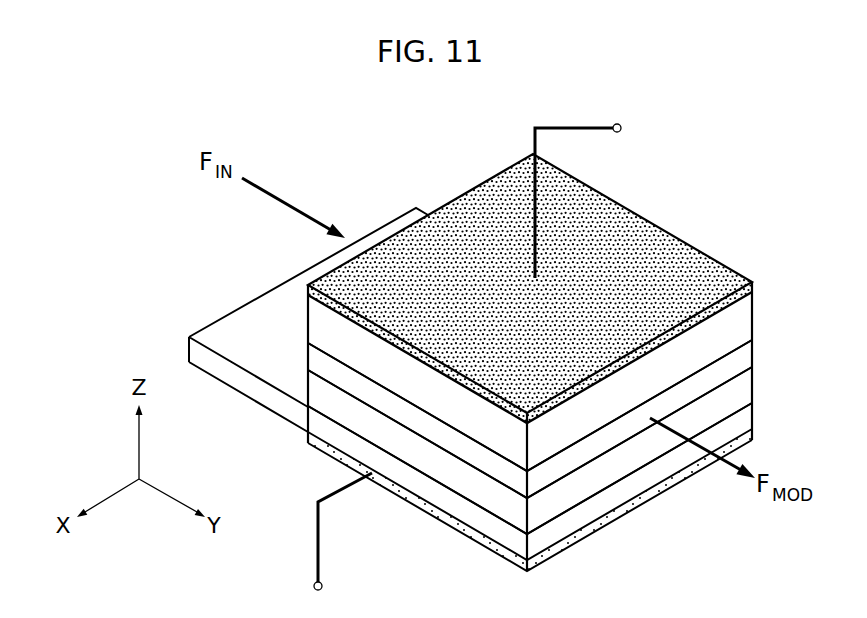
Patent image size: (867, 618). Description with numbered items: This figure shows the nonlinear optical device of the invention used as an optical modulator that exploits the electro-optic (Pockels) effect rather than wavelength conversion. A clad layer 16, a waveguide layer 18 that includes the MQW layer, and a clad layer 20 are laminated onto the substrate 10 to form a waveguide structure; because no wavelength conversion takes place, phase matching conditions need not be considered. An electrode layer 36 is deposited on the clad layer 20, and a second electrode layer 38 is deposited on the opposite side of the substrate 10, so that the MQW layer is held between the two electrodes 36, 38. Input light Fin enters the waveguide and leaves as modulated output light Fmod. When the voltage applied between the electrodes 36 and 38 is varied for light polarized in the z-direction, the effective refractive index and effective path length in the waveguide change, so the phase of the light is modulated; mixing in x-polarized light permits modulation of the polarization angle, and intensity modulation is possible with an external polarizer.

The substrate 10 is at (630, 493).
The clad layer 16 is at (747, 388).
The waveguide layer 18 is at (747, 360).
The clad layer 20 is at (745, 318).
The electrode layer 36 is at (708, 268).
The electrode layer 38 is at (453, 523).